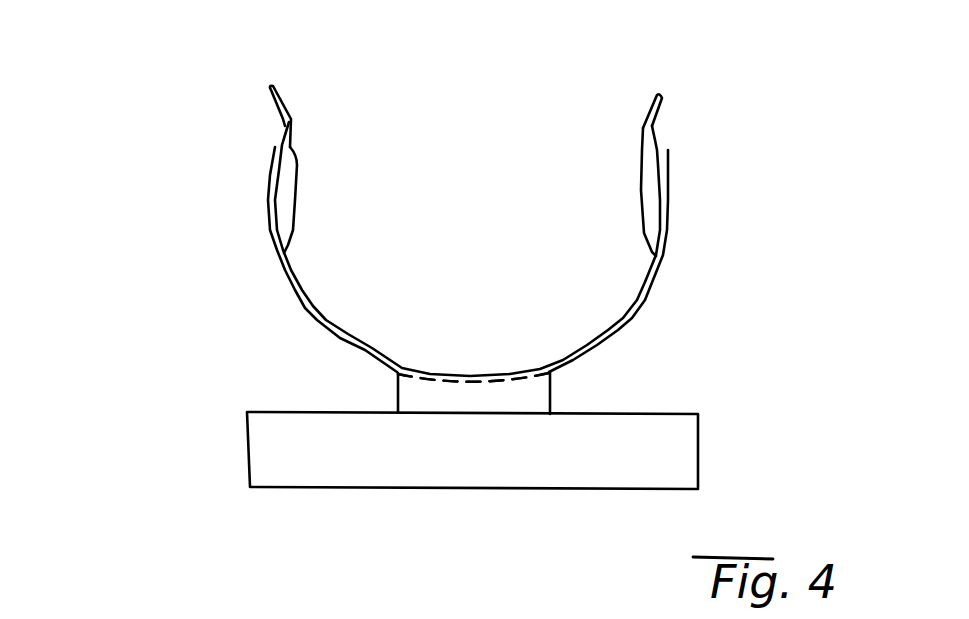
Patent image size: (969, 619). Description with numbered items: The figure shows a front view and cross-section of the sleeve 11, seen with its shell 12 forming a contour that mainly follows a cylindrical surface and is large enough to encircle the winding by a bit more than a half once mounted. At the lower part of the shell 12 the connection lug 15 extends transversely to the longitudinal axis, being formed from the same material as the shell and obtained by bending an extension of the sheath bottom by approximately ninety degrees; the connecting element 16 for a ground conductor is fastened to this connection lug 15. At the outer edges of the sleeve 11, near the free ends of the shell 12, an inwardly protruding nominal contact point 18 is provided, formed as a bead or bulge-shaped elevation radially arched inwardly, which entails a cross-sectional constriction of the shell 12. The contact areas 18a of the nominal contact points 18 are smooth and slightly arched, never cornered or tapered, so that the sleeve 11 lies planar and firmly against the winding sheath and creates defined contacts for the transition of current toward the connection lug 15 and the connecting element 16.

The sleeve 11 is at (237, 314).
The shell 12 is at (327, 328).
The connection lug 15 is at (473, 398).
The connecting element 16 is at (577, 468).
The nominal contact point 18 is at (648, 203).
The contact area 18a is at (643, 181).